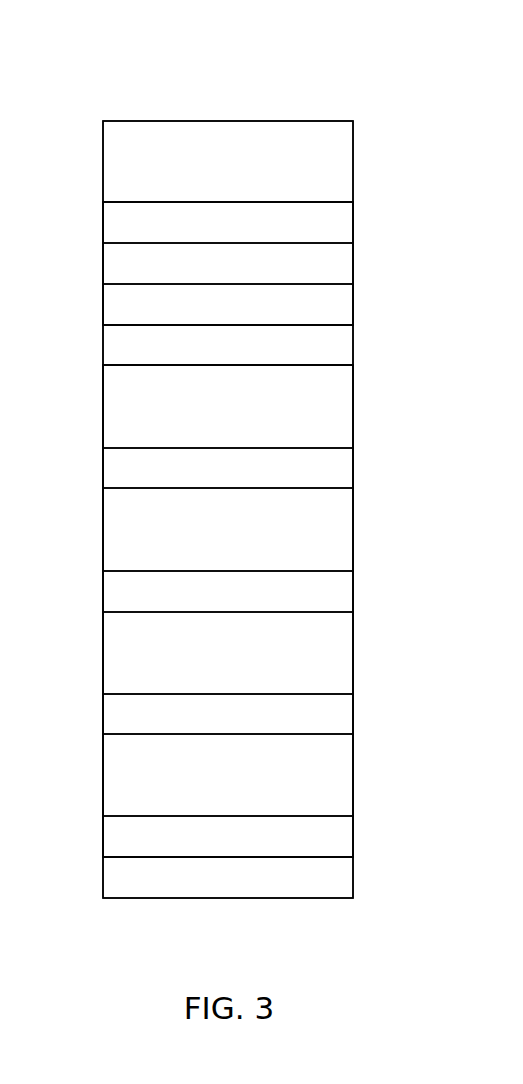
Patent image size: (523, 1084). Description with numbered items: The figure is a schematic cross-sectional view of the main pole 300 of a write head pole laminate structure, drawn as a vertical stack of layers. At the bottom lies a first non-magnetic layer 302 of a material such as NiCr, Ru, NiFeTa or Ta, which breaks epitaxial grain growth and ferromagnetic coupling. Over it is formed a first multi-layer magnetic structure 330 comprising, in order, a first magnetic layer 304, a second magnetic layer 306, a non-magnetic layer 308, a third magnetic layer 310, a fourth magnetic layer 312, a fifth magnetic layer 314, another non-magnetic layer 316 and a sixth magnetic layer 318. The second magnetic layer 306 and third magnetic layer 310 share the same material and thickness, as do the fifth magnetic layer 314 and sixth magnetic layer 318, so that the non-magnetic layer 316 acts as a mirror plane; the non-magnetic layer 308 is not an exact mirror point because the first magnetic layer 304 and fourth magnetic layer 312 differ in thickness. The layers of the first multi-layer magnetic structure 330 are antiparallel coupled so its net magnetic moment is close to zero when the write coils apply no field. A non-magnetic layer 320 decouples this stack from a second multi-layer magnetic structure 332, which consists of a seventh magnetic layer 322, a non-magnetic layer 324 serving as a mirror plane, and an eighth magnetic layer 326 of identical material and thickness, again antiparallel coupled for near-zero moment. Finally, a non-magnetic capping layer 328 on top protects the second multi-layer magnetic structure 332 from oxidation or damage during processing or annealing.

The main pole 300 is at (114, 64).
The first non-magnetic layer 302 is at (213, 888).
The first magnetic layer 304 is at (213, 847).
The second magnetic layer 306 is at (213, 785).
The non-magnetic layer 308 is at (213, 724).
The third magnetic layer 310 is at (213, 663).
The fourth magnetic layer 312 is at (213, 602).
The fifth magnetic layer 314 is at (213, 540).
The non-magnetic layer 316 is at (213, 478).
The sixth magnetic layer 318 is at (213, 417).
The non-magnetic layer 320 is at (213, 355).
The seventh magnetic layer 322 is at (213, 315).
The non-magnetic layer 324 is at (213, 274).
The eighth magnetic layer 326 is at (213, 233).
The non-magnetic capping layer 328 is at (213, 171).
The first multi-layer magnetic structure 330 is at (362, 857).
The second multi-layer magnetic structure 332 is at (362, 202).